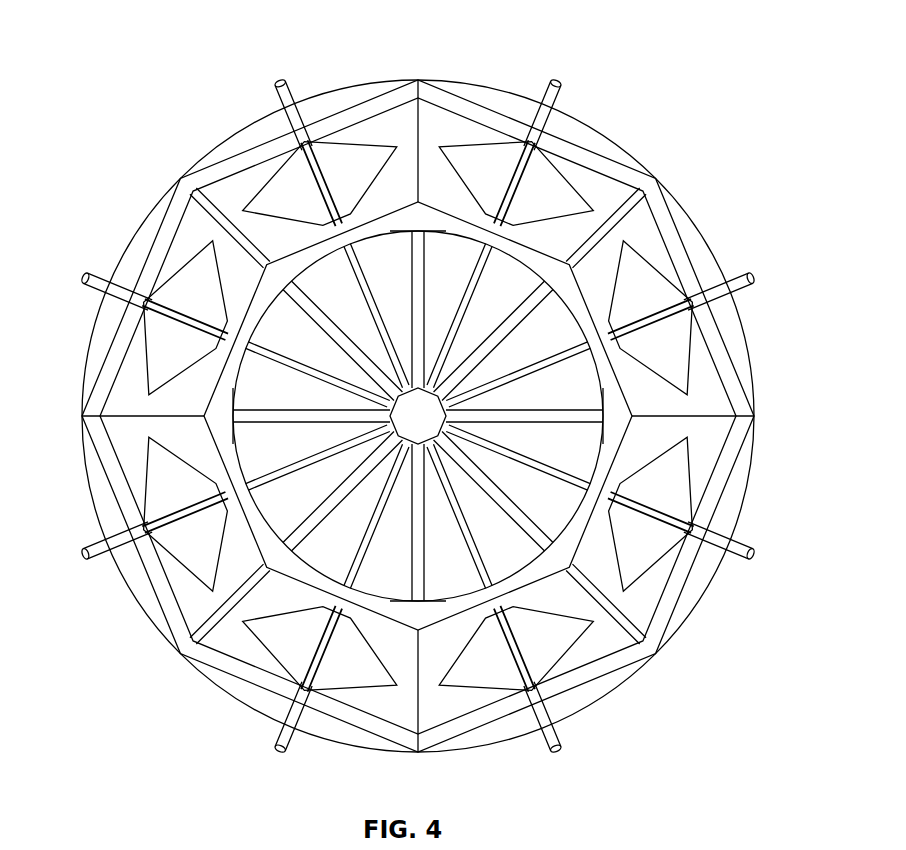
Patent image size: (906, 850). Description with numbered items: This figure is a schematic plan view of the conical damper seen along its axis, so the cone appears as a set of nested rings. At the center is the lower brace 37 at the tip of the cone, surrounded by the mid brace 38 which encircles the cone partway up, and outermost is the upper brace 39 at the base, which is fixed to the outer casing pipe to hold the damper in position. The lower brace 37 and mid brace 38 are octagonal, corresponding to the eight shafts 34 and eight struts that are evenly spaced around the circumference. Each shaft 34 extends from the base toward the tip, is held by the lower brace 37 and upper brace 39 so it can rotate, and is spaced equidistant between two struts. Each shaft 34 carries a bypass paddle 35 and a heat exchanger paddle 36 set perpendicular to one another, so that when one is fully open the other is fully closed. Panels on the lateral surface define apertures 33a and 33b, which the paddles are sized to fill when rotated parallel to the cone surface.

The aperture 33a is at (283, 187).
The aperture 33b is at (300, 285).
The shaft 34 is at (748, 278).
The bypass paddle 35 is at (386, 252).
The heat exchanger paddle 36 is at (520, 183).
The lower brace 37 is at (418, 420).
The mid brace 38 is at (453, 227).
The upper brace 39 is at (625, 173).